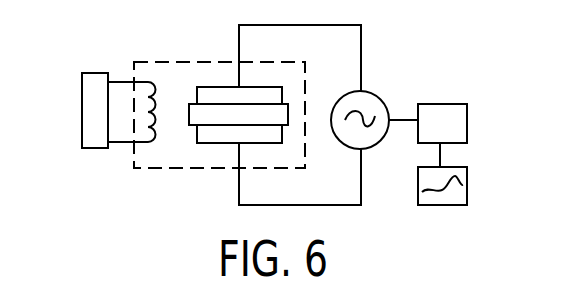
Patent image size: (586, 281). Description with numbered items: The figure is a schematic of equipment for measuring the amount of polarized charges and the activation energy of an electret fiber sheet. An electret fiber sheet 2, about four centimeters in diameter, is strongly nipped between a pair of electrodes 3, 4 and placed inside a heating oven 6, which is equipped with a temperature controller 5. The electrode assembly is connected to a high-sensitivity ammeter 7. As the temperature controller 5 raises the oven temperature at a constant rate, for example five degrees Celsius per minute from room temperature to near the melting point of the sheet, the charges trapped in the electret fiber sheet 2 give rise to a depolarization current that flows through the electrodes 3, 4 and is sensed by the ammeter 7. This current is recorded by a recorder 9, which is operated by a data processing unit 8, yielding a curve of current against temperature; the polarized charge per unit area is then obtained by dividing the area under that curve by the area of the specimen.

The electret fiber sheet 2 is at (197, 119).
The electrode 3 is at (231, 93).
The electrode 4 is at (240, 135).
The temperature controller 5 is at (93, 110).
The heating oven 6 is at (193, 72).
The high-sensitivity ammeter 7 is at (365, 100).
The data processing unit 8 is at (460, 116).
The recorder 9 is at (465, 183).